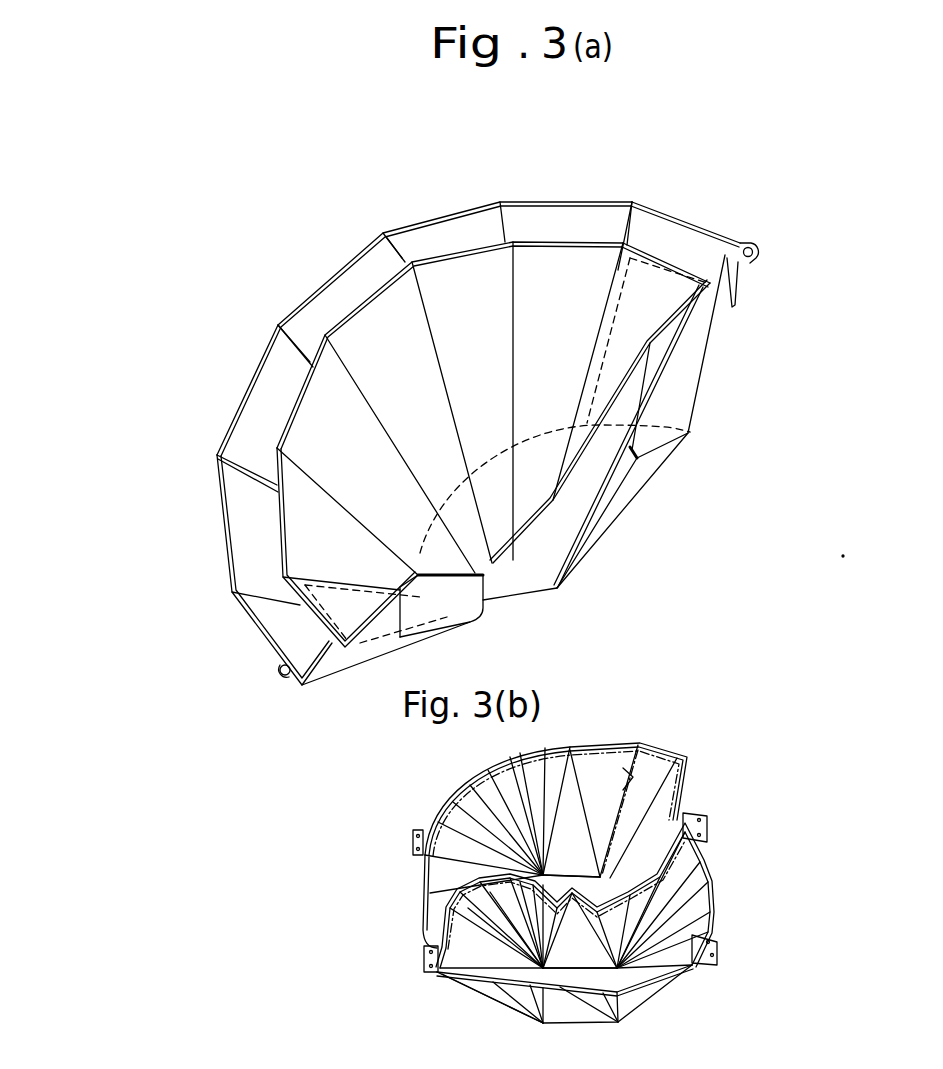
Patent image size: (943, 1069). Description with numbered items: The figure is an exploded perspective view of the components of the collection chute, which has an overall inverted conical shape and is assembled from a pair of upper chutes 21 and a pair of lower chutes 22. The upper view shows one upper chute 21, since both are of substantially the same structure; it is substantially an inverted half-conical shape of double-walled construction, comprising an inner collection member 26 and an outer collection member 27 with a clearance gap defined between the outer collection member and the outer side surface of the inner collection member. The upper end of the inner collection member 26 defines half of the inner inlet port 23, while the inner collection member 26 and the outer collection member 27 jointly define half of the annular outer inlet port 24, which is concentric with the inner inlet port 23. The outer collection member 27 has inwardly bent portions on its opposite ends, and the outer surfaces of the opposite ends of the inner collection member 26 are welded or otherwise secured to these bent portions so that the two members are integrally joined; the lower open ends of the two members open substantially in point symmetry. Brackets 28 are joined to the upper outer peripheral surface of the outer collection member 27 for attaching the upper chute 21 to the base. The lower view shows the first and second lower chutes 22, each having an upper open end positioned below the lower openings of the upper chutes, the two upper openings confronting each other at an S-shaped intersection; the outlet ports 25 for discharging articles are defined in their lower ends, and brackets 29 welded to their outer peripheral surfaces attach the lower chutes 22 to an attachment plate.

In FIG. 3A, the upper chute 21 is at (717, 223).
In FIG. 3B, the lower chute 22 is at (608, 740).
In FIG. 3A, the inner inlet port 23 is at (463, 290).
In FIG. 3A, the outer inlet port 24 is at (372, 270).
In FIG. 3B, the outlet port 25 is at (599, 891).
In FIG. 3A, the inner collection member 26 is at (296, 397).
In FIG. 3A, the outer collection member 27 is at (268, 348).
In FIG. 3A, the bracket 28 is at (760, 252).
In FIG. 3B, the bracket 29 is at (413, 845).